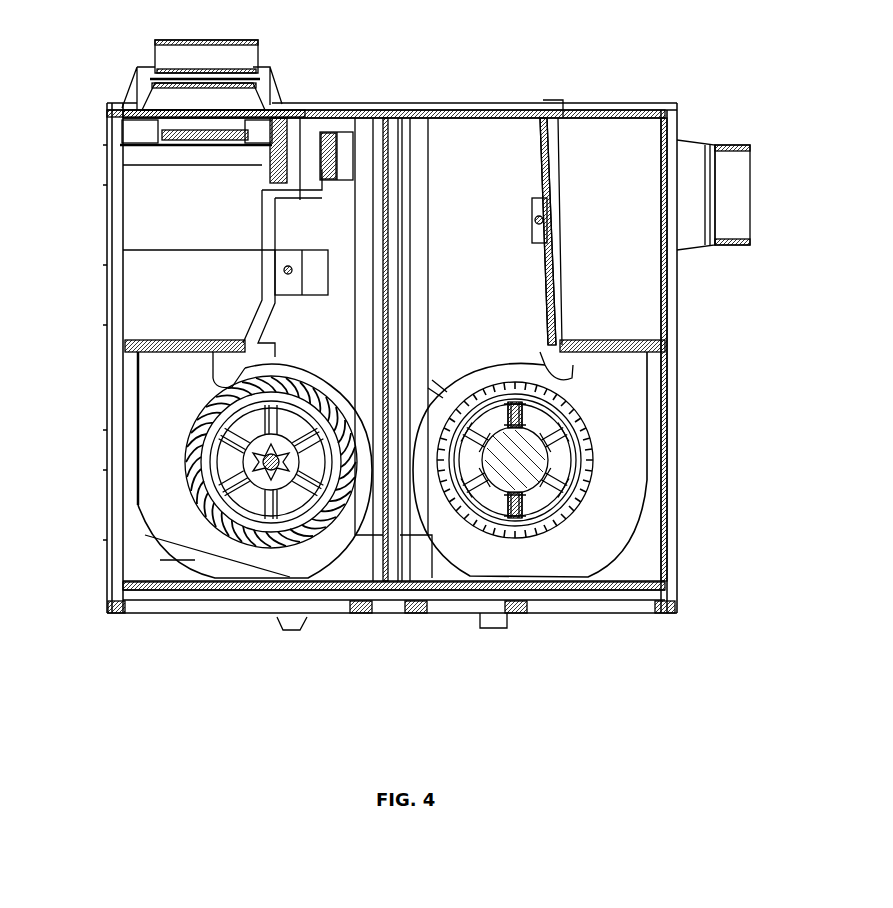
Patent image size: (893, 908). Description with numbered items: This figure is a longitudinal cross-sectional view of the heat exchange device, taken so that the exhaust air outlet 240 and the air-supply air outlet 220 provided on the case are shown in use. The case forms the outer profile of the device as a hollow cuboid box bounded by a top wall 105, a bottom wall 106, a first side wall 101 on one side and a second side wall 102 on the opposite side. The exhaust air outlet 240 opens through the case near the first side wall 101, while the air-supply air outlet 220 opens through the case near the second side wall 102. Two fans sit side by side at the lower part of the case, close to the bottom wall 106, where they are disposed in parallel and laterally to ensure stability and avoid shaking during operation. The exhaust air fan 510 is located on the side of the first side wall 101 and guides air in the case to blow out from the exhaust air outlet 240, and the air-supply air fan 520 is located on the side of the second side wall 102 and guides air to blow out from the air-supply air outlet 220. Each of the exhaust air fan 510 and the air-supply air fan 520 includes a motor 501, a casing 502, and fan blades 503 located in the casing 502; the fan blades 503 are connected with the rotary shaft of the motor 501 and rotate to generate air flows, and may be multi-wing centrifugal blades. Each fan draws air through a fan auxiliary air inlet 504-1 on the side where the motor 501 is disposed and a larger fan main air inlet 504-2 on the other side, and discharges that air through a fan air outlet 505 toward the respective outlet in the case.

The first side wall 101 is at (107, 257).
The second side wall 102 is at (678, 516).
The top wall 105 is at (588, 100).
The bottom wall 106 is at (152, 615).
The exhaust air outlet 240 is at (185, 108).
The air-supply air outlet 220 is at (682, 180).
The fan air outlet 505 is at (172, 365).
The exhaust air fan 510 is at (255, 528).
The air-supply air fan 520 is at (716, 673).
The motor 501 is at (256, 562).
The casing 502 is at (205, 515).
The fan blades 503 is at (222, 515).
The fan auxiliary air inlet 504-1 is at (458, 590).
The fan main air inlet 504-2 is at (350, 613).